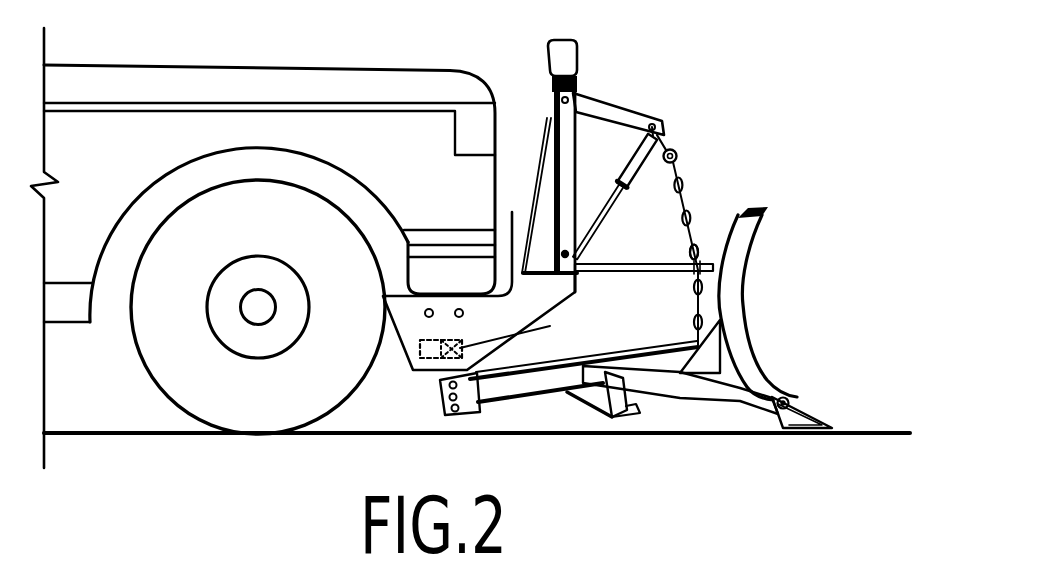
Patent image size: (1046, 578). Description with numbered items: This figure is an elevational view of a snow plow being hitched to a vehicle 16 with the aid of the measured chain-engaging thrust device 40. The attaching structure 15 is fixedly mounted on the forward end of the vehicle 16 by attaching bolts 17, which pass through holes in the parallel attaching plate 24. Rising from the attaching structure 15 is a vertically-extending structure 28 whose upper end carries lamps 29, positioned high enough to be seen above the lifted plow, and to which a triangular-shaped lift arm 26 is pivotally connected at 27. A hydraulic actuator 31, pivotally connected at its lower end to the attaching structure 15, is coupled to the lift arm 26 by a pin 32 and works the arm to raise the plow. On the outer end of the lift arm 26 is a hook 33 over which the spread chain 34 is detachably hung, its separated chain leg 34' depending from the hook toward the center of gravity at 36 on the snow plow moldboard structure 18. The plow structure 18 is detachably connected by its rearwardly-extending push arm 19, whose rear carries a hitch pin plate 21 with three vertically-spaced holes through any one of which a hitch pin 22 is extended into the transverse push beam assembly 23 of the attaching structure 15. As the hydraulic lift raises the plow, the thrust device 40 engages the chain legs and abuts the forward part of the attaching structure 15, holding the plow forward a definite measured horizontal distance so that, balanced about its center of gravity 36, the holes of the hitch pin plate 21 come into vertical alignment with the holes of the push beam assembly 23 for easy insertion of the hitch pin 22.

The attaching structure 15 is at (545, 66).
The vehicle 16 is at (316, 56).
The attaching bolts 17 is at (459, 309).
The snow plow moldboard structure 18 is at (757, 305).
The push arm 19 is at (520, 402).
The hitch pin plate 21 is at (444, 413).
The hitch pin 22 is at (485, 291).
The push beam assembly 23 is at (417, 348).
The attaching plate 24 is at (513, 200).
The lift arm 26 is at (605, 100).
The pivot 27 is at (578, 88).
The vertically-extending structure 28 is at (572, 120).
The lamps 29 is at (573, 38).
The hydraulic actuator 31 is at (630, 155).
The pin 32 is at (577, 272).
The hook 33 is at (673, 149).
The chain 34 is at (722, 244).
The chain leg 34' is at (734, 218).
The center of gravity 36 is at (688, 341).
The measured thrust device 40 is at (597, 254).